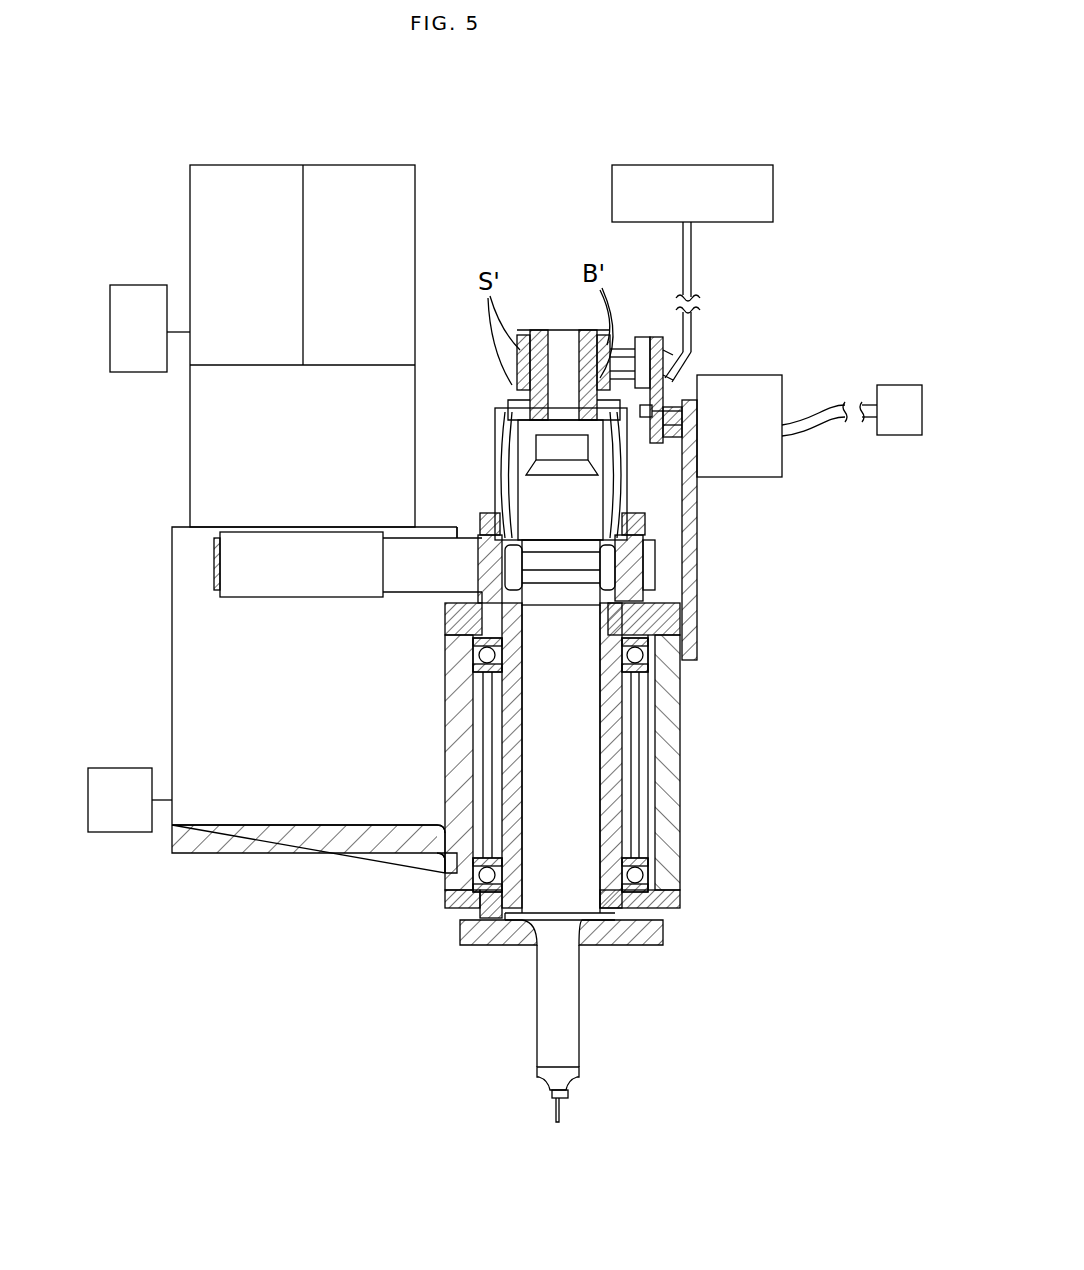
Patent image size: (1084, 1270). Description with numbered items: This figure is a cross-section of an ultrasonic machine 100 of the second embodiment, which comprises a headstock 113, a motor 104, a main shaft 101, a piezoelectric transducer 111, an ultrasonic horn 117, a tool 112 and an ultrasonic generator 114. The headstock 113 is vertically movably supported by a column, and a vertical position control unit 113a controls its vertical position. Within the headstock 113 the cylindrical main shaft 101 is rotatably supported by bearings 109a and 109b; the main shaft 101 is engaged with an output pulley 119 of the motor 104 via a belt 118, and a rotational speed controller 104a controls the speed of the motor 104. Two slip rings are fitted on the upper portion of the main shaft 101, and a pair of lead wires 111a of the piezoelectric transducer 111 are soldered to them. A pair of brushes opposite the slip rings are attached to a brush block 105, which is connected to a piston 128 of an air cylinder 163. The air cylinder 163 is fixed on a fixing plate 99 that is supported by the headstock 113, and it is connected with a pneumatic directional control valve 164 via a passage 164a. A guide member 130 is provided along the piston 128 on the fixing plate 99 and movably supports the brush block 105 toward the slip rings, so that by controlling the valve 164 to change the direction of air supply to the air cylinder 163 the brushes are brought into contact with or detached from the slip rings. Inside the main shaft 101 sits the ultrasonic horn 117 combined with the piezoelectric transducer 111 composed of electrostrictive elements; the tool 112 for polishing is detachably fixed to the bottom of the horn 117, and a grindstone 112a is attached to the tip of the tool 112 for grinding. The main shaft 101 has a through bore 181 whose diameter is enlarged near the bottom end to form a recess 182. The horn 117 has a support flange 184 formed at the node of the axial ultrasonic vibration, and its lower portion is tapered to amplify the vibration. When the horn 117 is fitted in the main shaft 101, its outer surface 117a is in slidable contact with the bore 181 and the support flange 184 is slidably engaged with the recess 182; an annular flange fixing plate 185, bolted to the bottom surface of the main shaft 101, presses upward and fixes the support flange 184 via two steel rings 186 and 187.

The ultrasonic machine 100 is at (547, 125).
The motor 104 is at (408, 200).
The rotational speed controller 104a is at (150, 380).
The ultrasonic generator 114 is at (775, 200).
The brush block 105 is at (643, 340).
The piston 128 is at (660, 412).
The guide member 130 is at (672, 420).
The fixing plate 99 is at (690, 597).
The air cylinder 163 is at (762, 385).
The pneumatic directional control valve 164 is at (898, 395).
The passage 164a is at (835, 422).
The headstock 113 is at (325, 860).
The vertical position control unit 113a is at (128, 835).
The output pulley 119 is at (350, 603).
The belt 118 is at (438, 548).
The lead wires 111a is at (505, 490).
The piezoelectric transducer 111 is at (600, 580).
The through bore 181 is at (605, 610).
The main shaft 101 is at (612, 745).
The outer surface 117a is at (612, 700).
The ultrasonic horn 117 is at (583, 808).
The bearing 109a is at (652, 662).
The bearing 109b is at (640, 880).
The steel ring 186 is at (487, 950).
The steel ring 187 is at (508, 952).
The flange fixing plate 185 is at (655, 932).
The support flange 184 is at (588, 950).
The recess 182 is at (612, 906).
The tool 112 is at (560, 1112).
The grindstone 112a is at (557, 1122).